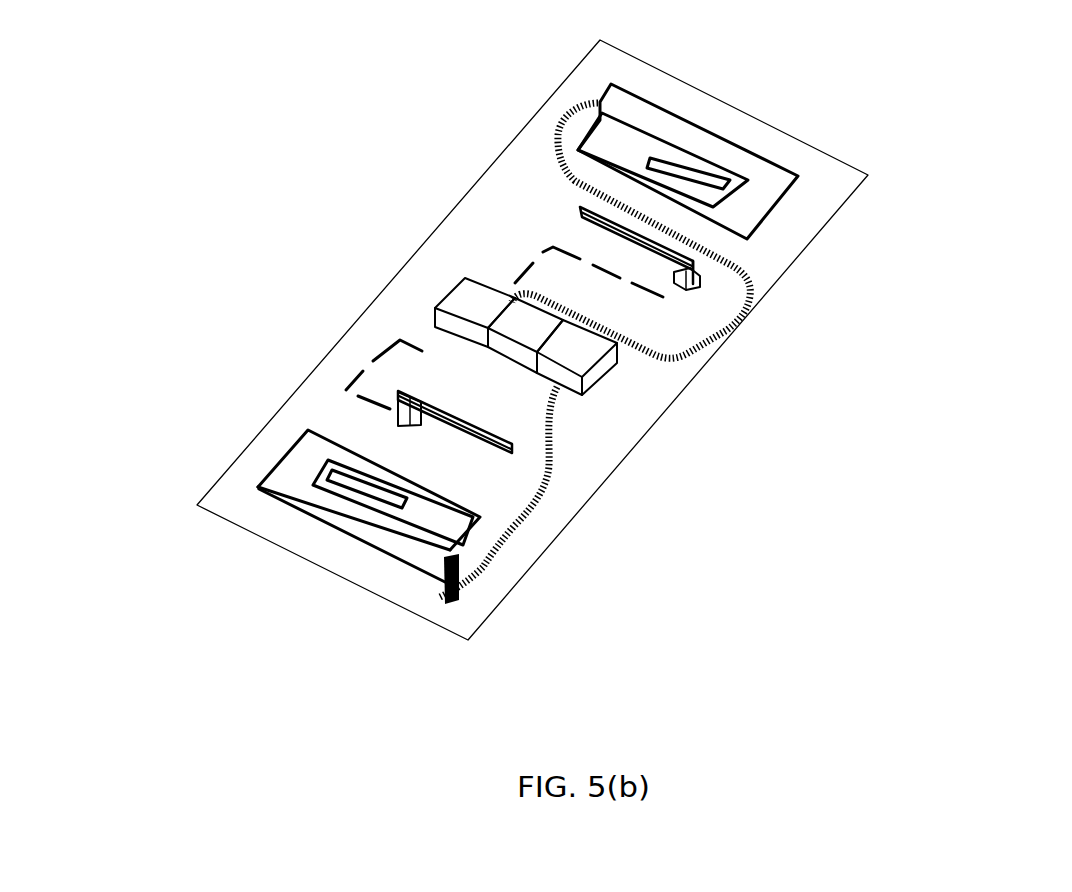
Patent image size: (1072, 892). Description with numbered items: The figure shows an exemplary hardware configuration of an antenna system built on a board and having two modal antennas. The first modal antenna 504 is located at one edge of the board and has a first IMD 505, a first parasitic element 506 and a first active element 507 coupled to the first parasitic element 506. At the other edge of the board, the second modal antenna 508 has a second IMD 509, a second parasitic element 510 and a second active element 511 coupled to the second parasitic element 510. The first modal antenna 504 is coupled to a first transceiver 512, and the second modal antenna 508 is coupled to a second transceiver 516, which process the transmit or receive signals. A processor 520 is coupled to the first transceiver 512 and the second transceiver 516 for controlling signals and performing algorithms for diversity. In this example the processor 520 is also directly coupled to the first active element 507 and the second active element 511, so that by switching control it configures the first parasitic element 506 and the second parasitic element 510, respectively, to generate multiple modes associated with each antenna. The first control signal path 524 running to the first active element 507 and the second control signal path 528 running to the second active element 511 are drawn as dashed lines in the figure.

The modal antenna 1 504 is at (363, 469).
The first IMD 505 is at (288, 507).
The first parasitic element 506 is at (416, 390).
The first active element 507 is at (423, 415).
The modal antenna 2 508 is at (744, 211).
The second IMD 509 is at (678, 108).
The second parasitic element 510 is at (581, 207).
The second active element 511 is at (697, 277).
The transceiver 1 512 is at (603, 360).
The transceiver 2 516 is at (502, 353).
The processor 520 is at (475, 287).
The control signal path 1 524 is at (417, 343).
The control signal path 2 528 is at (540, 252).